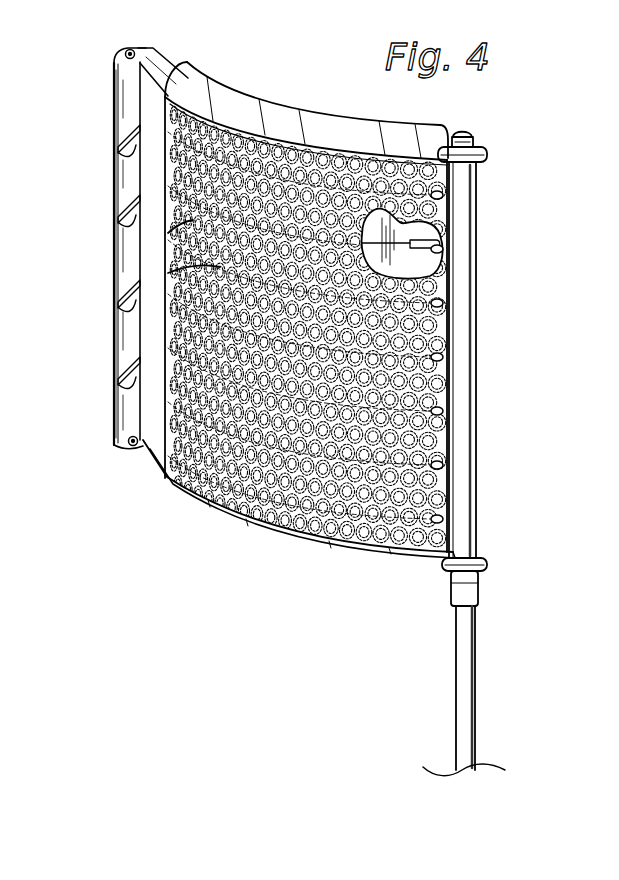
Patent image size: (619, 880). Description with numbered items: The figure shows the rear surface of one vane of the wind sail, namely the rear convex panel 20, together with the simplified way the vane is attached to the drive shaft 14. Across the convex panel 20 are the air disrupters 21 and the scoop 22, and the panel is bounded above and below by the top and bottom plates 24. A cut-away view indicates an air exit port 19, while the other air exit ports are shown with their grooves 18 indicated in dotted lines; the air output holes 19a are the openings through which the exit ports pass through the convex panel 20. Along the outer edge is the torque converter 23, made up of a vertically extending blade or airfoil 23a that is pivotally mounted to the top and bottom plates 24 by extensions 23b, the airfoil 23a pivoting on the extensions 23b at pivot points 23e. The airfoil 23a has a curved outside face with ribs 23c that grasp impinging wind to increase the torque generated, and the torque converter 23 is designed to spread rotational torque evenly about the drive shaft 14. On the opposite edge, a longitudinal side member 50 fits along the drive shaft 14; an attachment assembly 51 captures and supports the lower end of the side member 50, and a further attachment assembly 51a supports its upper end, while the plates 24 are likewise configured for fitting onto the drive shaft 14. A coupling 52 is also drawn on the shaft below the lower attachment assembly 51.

The drive shaft 14 is at (457, 653).
The grooves 18 is at (168, 389).
The air exit port 19 is at (443, 245).
The air output holes 19a is at (443, 355).
The rear convex panel 20 is at (168, 237).
The air disrupters 21 is at (168, 278).
The scoop 22 is at (283, 108).
The torque converter 23 is at (102, 75).
The airfoil 23a is at (115, 327).
The extensions 23b is at (158, 78).
The ribs 23c is at (140, 196).
The pivot points 23e is at (127, 51).
The top and bottom plates 24 is at (180, 108).
The longitudinal side member 50 is at (442, 556).
The attachment assembly 51 is at (492, 148).
The attachment assembly 51a is at (469, 133).
The coupling 52 is at (452, 595).